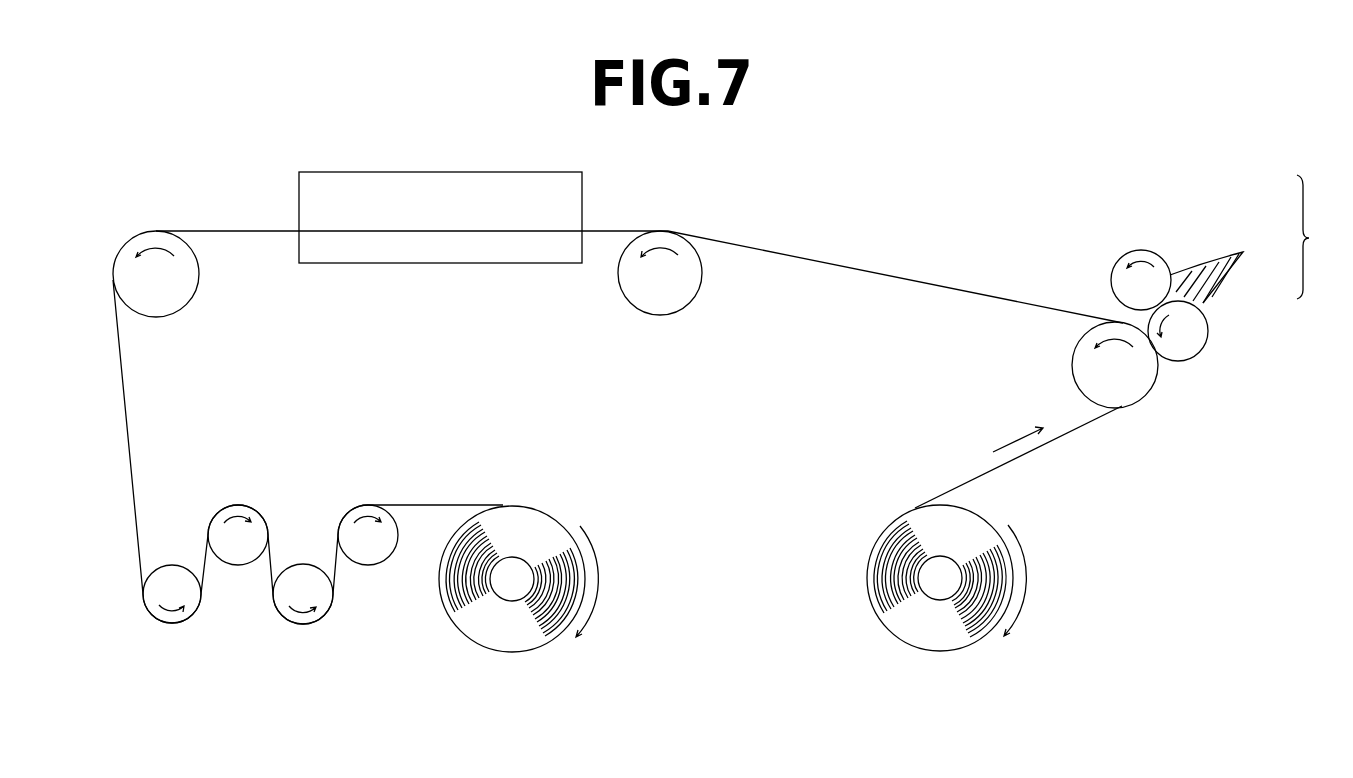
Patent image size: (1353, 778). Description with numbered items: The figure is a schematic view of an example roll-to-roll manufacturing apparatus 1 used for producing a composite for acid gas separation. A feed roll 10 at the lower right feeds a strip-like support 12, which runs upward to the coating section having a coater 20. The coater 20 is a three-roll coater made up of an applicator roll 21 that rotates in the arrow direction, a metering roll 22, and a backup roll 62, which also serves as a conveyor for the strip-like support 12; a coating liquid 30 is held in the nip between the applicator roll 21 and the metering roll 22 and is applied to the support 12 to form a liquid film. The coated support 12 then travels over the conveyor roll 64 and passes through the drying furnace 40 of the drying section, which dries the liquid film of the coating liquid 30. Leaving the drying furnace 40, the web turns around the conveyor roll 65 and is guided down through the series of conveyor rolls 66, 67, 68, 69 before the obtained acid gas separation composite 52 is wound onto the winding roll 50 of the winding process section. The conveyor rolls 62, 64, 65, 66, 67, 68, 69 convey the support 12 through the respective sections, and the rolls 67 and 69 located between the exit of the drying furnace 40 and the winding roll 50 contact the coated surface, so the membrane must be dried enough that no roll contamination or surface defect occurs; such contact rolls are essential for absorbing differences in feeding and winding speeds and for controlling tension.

The manufacturing apparatus 1 is at (1041, 137).
The feed roll 10 is at (940, 652).
The strip-like support 12 is at (1052, 447).
The coater 20 is at (1321, 237).
The applicator roll 21 is at (1201, 326).
The metering roll 22 is at (1149, 251).
The coating liquid 30 is at (1193, 288).
The drying furnace 40 is at (455, 177).
The winding roll 50 is at (475, 636).
The acid gas separation composite 52 is at (243, 234).
The backup roll 62 is at (1072, 370).
The conveyor roll 64 is at (656, 315).
The conveyor roll 65 is at (178, 316).
The conveyor roll 66 is at (173, 564).
The conveyor roll 67 is at (238, 566).
The conveyor roll 68 is at (303, 564).
The conveyor roll 69 is at (368, 566).